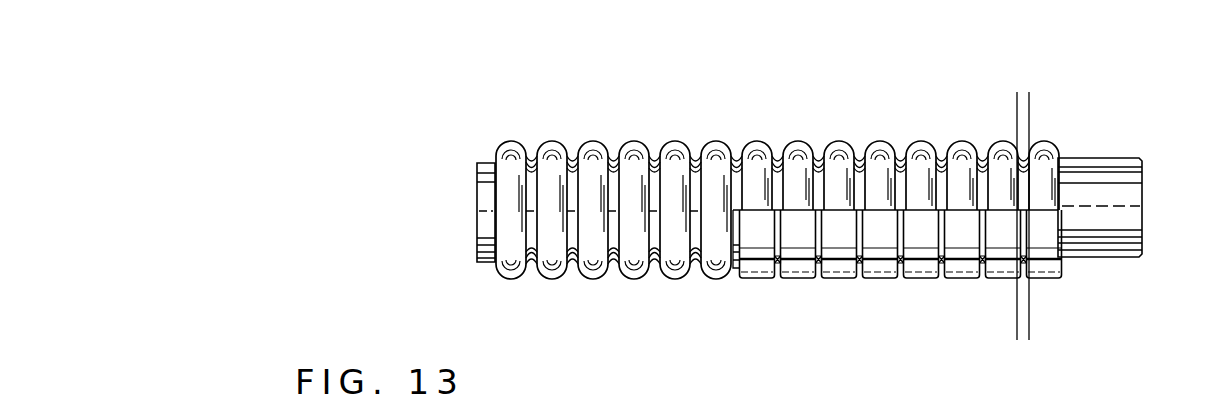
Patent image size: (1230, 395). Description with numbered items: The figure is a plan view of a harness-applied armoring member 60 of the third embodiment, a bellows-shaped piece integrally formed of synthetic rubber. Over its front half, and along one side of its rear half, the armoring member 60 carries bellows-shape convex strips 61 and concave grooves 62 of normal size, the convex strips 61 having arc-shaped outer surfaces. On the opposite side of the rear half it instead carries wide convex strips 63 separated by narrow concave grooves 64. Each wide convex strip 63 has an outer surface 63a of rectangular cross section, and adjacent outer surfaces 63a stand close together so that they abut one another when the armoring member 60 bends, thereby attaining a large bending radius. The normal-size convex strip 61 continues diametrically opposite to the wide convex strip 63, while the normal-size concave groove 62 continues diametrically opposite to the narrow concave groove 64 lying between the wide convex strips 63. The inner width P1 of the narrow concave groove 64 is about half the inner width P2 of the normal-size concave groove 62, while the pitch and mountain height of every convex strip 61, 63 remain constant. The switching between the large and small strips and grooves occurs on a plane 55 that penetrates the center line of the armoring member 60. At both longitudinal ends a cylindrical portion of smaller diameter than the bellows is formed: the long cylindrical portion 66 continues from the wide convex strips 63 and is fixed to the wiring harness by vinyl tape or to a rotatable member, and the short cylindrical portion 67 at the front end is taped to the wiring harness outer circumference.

The harness-applied armoring member 60 is at (946, 99).
The convex strip 61 is at (879, 142).
The concave groove 62 is at (901, 151).
The wide convex strip 63 is at (843, 278).
The outer surface 63a is at (818, 272).
The narrow concave groove 64 is at (860, 273).
The plane 55 is at (1047, 203).
The long cylindrical portion 66 is at (1131, 200).
The short cylindrical portion 67 is at (485, 221).
The inner width of narrow concave groove P1 is at (987, 338).
The inner width of concave groove P2 is at (987, 92).